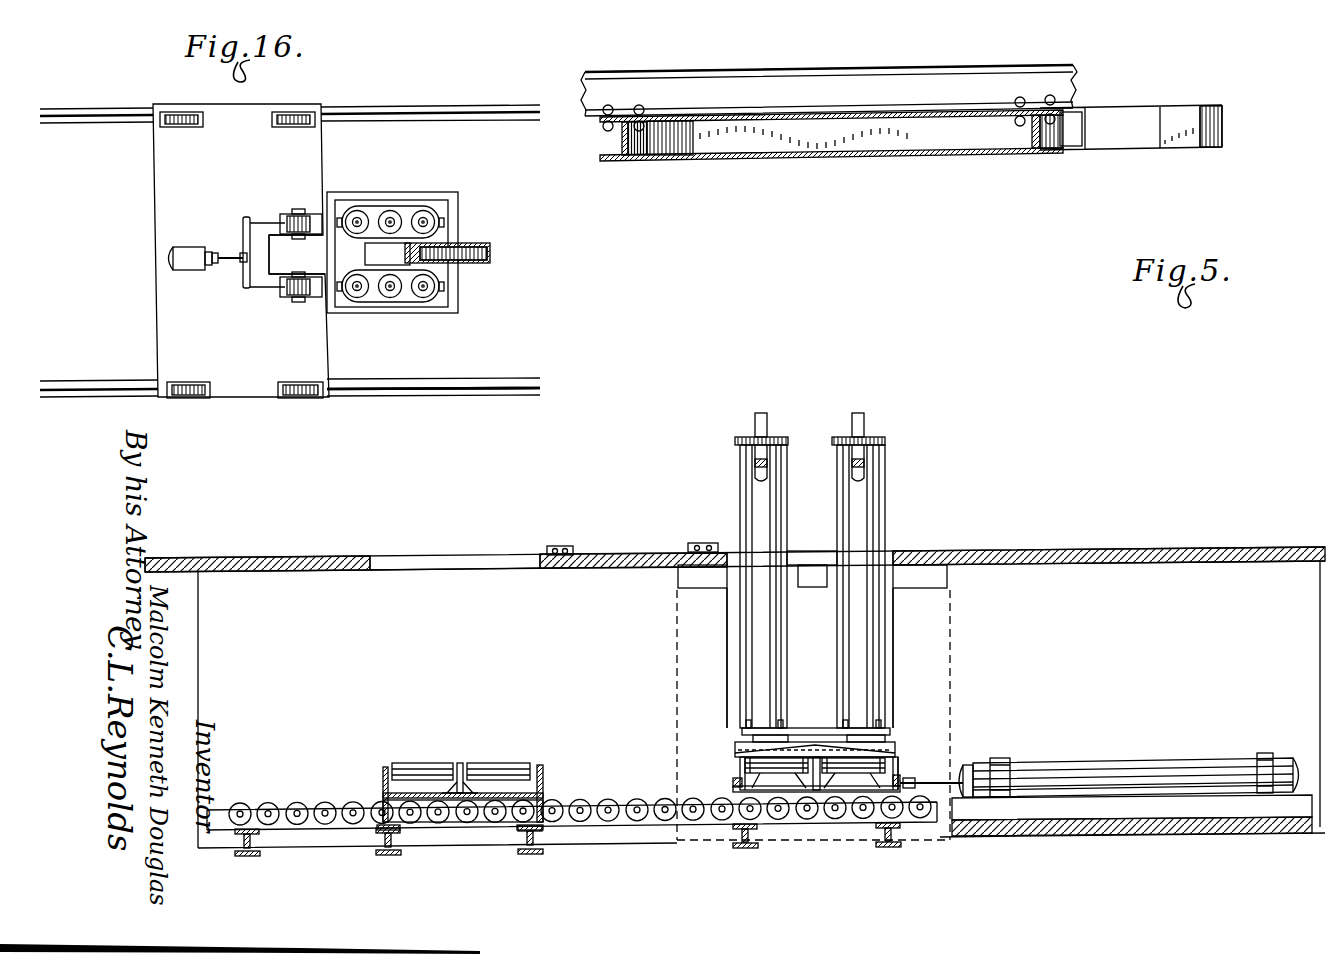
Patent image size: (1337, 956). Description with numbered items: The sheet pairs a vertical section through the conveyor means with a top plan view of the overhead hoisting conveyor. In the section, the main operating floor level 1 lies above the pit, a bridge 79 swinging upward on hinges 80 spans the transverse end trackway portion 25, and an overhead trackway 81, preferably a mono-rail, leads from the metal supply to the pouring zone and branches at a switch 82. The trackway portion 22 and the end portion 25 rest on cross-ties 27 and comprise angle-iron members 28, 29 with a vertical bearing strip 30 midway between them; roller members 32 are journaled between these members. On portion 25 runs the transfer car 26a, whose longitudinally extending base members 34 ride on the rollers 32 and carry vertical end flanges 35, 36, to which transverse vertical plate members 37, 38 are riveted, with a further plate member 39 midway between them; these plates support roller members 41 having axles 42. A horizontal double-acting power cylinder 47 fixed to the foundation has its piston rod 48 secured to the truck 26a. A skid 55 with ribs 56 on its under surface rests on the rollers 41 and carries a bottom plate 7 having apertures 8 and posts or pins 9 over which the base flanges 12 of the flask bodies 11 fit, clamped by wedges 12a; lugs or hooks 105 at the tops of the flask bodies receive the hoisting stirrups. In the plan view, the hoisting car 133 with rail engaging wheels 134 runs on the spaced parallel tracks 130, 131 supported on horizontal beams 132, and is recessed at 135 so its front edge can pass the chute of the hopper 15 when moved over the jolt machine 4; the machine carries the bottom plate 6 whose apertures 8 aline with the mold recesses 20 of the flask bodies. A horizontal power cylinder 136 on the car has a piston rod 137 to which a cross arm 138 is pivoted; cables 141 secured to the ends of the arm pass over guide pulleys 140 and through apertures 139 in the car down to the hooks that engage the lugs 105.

In FIG. 5, the main operating floor level 1 is at (1060, 548).
In FIG. 16, the jolt machine 4 is at (457, 194).
In FIG. 16, the bottom plate 6 is at (446, 300).
In FIG. 5, the bottom plate 7 is at (890, 733).
In FIG. 16, the apertures 8 is at (391, 297).
In FIG. 5, the post or pin 9 is at (760, 722).
In FIG. 16, the flask body 11 is at (418, 212).
In FIG. 5, the flask body 11 is at (837, 528).
In FIG. 5, the base flanges 12 is at (872, 726).
In FIG. 5, the wedges 12a is at (746, 725).
In FIG. 16, the hopper or bin 15 is at (365, 253).
In FIG. 16, the mold recesses 20 is at (391, 211).
In FIG. 5, the trackway portion 22 is at (512, 762).
In FIG. 5, the end trackway portion 25 is at (600, 830).
In FIG. 5, the transfer car 26a is at (900, 776).
In FIG. 5, the cross-ties 27 is at (518, 852).
In FIG. 5, the angle-iron member 28 is at (383, 776).
In FIG. 5, the angle-iron member 29 is at (543, 774).
In FIG. 5, the bearing strip 30 is at (460, 762).
In FIG. 5, the roller members 32 is at (420, 762).
In FIG. 5, the base members 34 is at (786, 792).
In FIG. 5, the end flange 35 is at (733, 784).
In FIG. 5, the end flange 36 is at (908, 781).
In FIG. 5, the plate member 37 is at (740, 766).
In FIG. 5, the plate member 38 is at (898, 762).
In FIG. 5, the plate member 39 is at (832, 792).
In FIG. 5, the roller members 41 is at (795, 760).
In FIG. 5, the axles or shafts 42 is at (818, 760).
In FIG. 5, the power cylinder 47 is at (1100, 768).
In FIG. 5, the piston rod 48 is at (966, 772).
In FIG. 5, the skids 55 is at (735, 748).
In FIG. 5, the ribs 56 is at (778, 773).
In FIG. 5, the bridge 79 is at (625, 572).
In FIG. 5, the hinges 80 is at (560, 546).
In FIG. 5, the overhead trackway 81 is at (930, 142).
In FIG. 5, the switch 82 is at (1112, 140).
In FIG. 5, the lugs or hooks 105 is at (755, 463).
In FIG. 16, the track 130 is at (372, 106).
In FIG. 16, the track 131 is at (378, 387).
In FIG. 16, the horizontal beams 132 is at (432, 106).
In FIG. 16, the hoisting car 133 is at (165, 186).
In FIG. 16, the rail engaging wheels 134 is at (185, 112).
In FIG. 16, the recess 135 is at (277, 245).
In FIG. 16, the power cylinder 136 is at (180, 247).
In FIG. 16, the piston rod 137 is at (226, 264).
In FIG. 16, the cross arm 138 is at (243, 280).
In FIG. 16, the apertures 139 is at (305, 214).
In FIG. 16, the guide pulleys 140 is at (287, 235).
In FIG. 16, the cables 141 is at (258, 222).